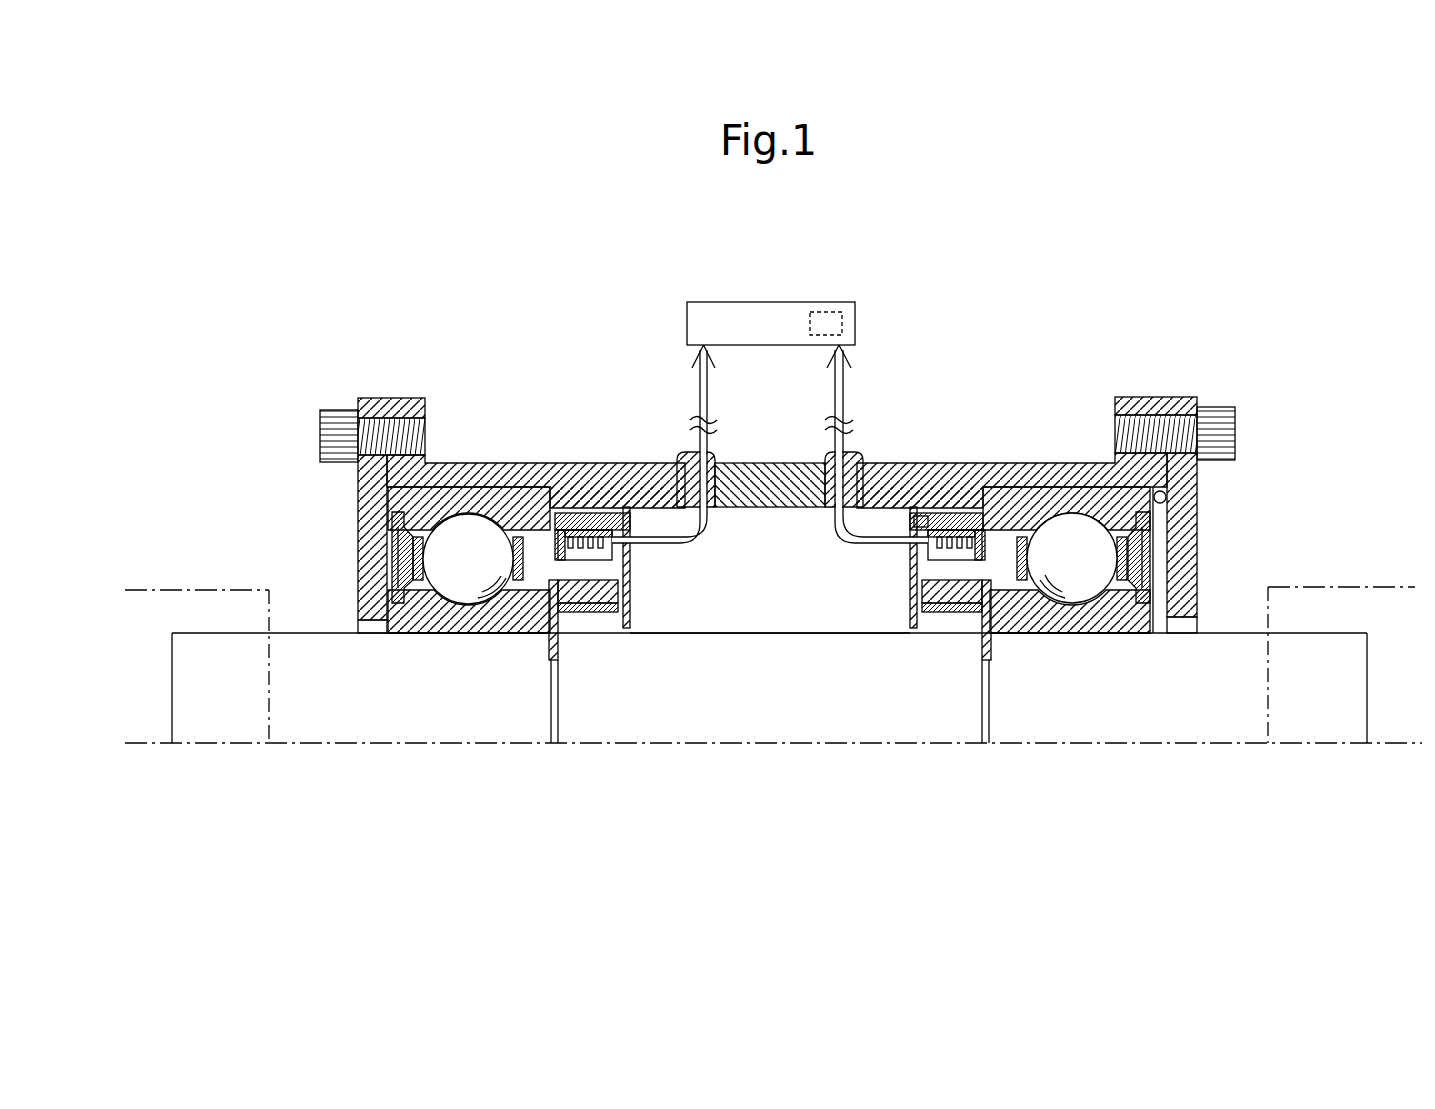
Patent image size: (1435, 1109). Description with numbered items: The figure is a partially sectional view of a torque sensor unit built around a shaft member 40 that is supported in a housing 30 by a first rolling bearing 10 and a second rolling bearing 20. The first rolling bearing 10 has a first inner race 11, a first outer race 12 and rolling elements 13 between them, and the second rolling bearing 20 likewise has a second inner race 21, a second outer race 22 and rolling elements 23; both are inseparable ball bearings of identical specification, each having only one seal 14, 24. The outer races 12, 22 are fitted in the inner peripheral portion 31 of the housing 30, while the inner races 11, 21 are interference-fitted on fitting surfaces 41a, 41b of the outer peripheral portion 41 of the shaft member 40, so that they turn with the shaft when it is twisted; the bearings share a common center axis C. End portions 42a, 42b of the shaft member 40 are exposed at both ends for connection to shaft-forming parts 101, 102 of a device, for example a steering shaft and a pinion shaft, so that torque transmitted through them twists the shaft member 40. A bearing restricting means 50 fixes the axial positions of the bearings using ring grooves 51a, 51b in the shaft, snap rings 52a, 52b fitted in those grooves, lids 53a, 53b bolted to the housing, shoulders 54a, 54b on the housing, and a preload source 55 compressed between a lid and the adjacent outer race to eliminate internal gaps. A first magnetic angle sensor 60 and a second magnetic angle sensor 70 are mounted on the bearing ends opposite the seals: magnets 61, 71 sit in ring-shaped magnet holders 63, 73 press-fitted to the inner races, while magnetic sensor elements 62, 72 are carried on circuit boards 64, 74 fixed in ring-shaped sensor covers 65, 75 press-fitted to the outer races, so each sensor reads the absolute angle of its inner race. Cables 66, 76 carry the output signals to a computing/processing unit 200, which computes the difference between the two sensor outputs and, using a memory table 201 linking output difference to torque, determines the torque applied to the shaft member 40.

The first rolling bearing 10 is at (473, 583).
The first inner race 11 is at (492, 640).
The first outer race 12 is at (466, 500).
The rolling elements 13 is at (488, 548).
The seal 14 is at (398, 480).
The second rolling bearing 20 is at (1099, 558).
The second inner race 21 is at (1070, 640).
The second outer race 22 is at (1072, 500).
The rolling elements 23 is at (1050, 545).
The seal 24 is at (1140, 505).
The housing 30 is at (1137, 384).
The inner peripheral portion 31 is at (773, 508).
The shaft member 40 is at (769, 668).
The outer peripheral portion 41 is at (792, 635).
The fitting surface 41a is at (450, 640).
The fitting surface 41b is at (1110, 640).
The end portion 42a is at (218, 710).
The end portion 42b is at (1325, 708).
The bearing restricting means 50 is at (748, 622).
The ring groove 51a is at (556, 700).
The ring groove 51b is at (984, 700).
The snap ring 52a is at (560, 625).
The snap ring 52b is at (983, 625).
The lid 53a is at (353, 600).
The lid 53b is at (1185, 582).
The shoulder 54a is at (537, 500).
The shoulder 54b is at (983, 500).
The preload source 55 is at (1165, 492).
The first magnetic angle sensor 60 is at (655, 486).
The magnet 61 is at (638, 597).
The magnetic sensor element 62 is at (587, 562).
The magnet holder 63 is at (600, 612).
The circuit board 64 is at (618, 527).
The sensor cover 65 is at (632, 520).
The cable 66 is at (708, 387).
The second magnetic angle sensor 70 is at (883, 486).
The magnet 71 is at (908, 597).
The magnetic sensor element 72 is at (920, 562).
The magnet holder 73 is at (935, 608).
The circuit board 74 is at (920, 513).
The sensor cover 75 is at (912, 527).
The cable 76 is at (830, 385).
The shaft-forming part 101 is at (173, 590).
The shaft-forming part 102 is at (1338, 587).
The computing/processing unit 200 is at (764, 277).
The memory table 201 is at (830, 308).
The center axis C is at (1408, 745).